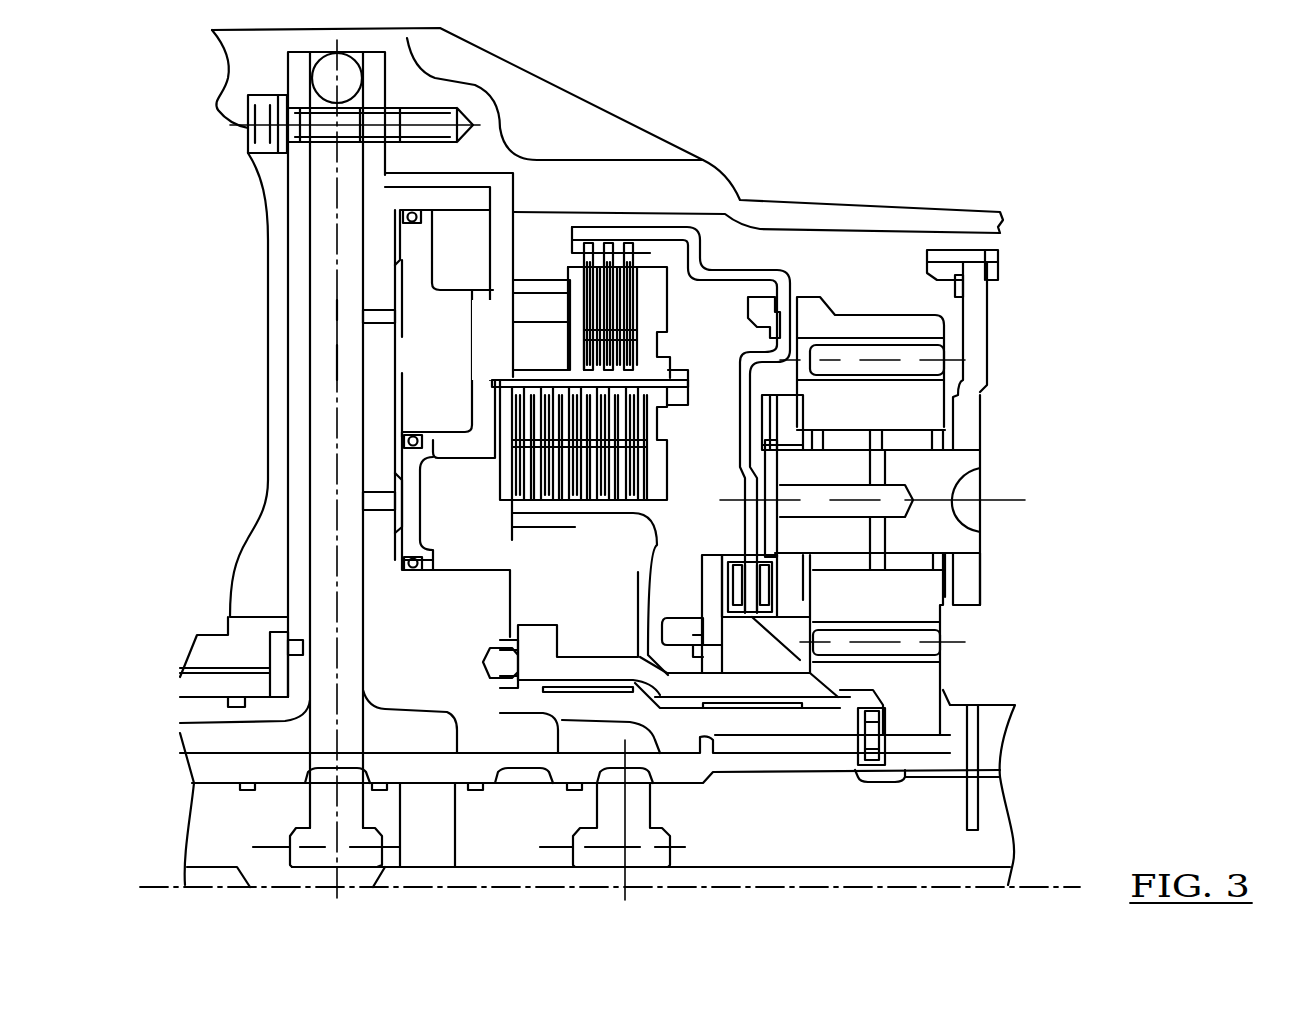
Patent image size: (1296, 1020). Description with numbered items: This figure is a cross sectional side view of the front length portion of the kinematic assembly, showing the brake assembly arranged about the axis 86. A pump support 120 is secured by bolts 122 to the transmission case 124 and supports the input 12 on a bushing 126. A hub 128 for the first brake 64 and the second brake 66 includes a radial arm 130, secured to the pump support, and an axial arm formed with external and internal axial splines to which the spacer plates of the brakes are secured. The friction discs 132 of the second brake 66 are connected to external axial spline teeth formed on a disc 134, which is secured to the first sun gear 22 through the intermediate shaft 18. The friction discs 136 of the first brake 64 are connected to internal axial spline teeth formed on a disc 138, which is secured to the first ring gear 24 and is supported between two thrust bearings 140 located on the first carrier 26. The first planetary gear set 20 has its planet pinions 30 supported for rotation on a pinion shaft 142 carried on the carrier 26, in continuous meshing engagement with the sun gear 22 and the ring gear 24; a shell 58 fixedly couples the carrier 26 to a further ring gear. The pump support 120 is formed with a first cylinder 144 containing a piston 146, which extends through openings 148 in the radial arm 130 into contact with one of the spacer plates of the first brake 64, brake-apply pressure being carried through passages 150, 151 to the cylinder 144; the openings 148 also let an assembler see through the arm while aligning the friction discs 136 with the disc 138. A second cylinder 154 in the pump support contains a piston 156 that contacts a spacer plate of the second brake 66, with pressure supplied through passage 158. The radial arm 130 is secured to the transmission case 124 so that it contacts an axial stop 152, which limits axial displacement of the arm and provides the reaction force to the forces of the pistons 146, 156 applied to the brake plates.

The input 12 is at (856, 842).
The intermediate shaft 18 is at (990, 732).
The first planetary gear set 20 is at (1027, 455).
The first sun gear 22 is at (923, 685).
The first ring gear 24 is at (867, 325).
The first carrier 26 is at (968, 582).
The planet pinions 30 is at (923, 603).
The shell 58 is at (990, 267).
The first brake 64 is at (687, 300).
The second brake 66 is at (490, 490).
The axis 86 is at (850, 878).
The pump support 120 is at (286, 340).
The bolts 122 is at (260, 130).
The transmission case 124 is at (492, 128).
The bushing 126 is at (763, 772).
The hub 128 is at (455, 240).
The radial arm 130 is at (515, 230).
The friction discs 132 is at (578, 527).
The disc 134 is at (637, 607).
The friction discs 136 is at (628, 243).
The disc 138 is at (740, 395).
The thrust bearings 140 is at (732, 587).
The pinion shaft 142 is at (968, 540).
The first cylinder 144 is at (478, 280).
The piston 146 is at (463, 323).
The openings 148 is at (393, 270).
The passage 150 is at (375, 315).
The passage 151 is at (320, 420).
The axial stop 152 is at (513, 193).
The second cylinder 154 is at (397, 493).
The piston 156 is at (440, 478).
The passage 158 is at (372, 500).